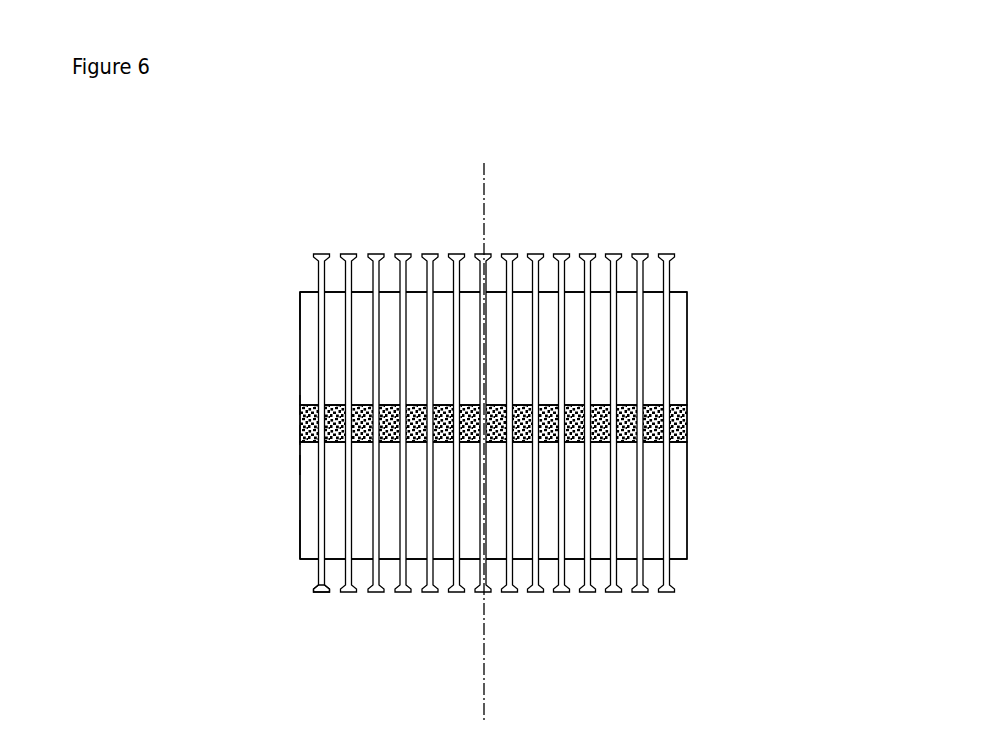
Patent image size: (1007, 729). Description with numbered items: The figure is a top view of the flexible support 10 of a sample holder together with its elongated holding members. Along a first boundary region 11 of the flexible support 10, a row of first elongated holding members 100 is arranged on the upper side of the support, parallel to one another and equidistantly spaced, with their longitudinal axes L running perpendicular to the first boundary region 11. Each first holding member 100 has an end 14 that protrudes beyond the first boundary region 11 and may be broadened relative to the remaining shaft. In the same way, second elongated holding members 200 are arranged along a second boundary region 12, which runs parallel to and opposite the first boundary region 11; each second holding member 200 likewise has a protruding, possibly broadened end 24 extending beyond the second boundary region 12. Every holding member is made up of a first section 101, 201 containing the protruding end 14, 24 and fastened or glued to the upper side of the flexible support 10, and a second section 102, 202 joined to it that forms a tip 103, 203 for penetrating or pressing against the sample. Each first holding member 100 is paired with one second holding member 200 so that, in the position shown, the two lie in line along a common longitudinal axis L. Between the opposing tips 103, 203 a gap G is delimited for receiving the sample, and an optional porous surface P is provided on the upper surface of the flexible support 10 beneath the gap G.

The flexible support 10 is at (680, 465).
The first boundary region 11 is at (677, 292).
The second boundary region 12 is at (677, 560).
The end 14 is at (316, 255).
The end 24 is at (315, 591).
The first elongated holding member 100 is at (306, 349).
The first section 101 is at (322, 322).
The second section 102 is at (318, 369).
The tip 103 is at (312, 412).
The second elongated holding member 200 is at (306, 512).
The first section 201 is at (320, 527).
The second section 202 is at (320, 465).
The tip 203 is at (312, 427).
The gap G is at (688, 407).
The porous surface P is at (688, 424).
The longitudinal axis L is at (485, 645).